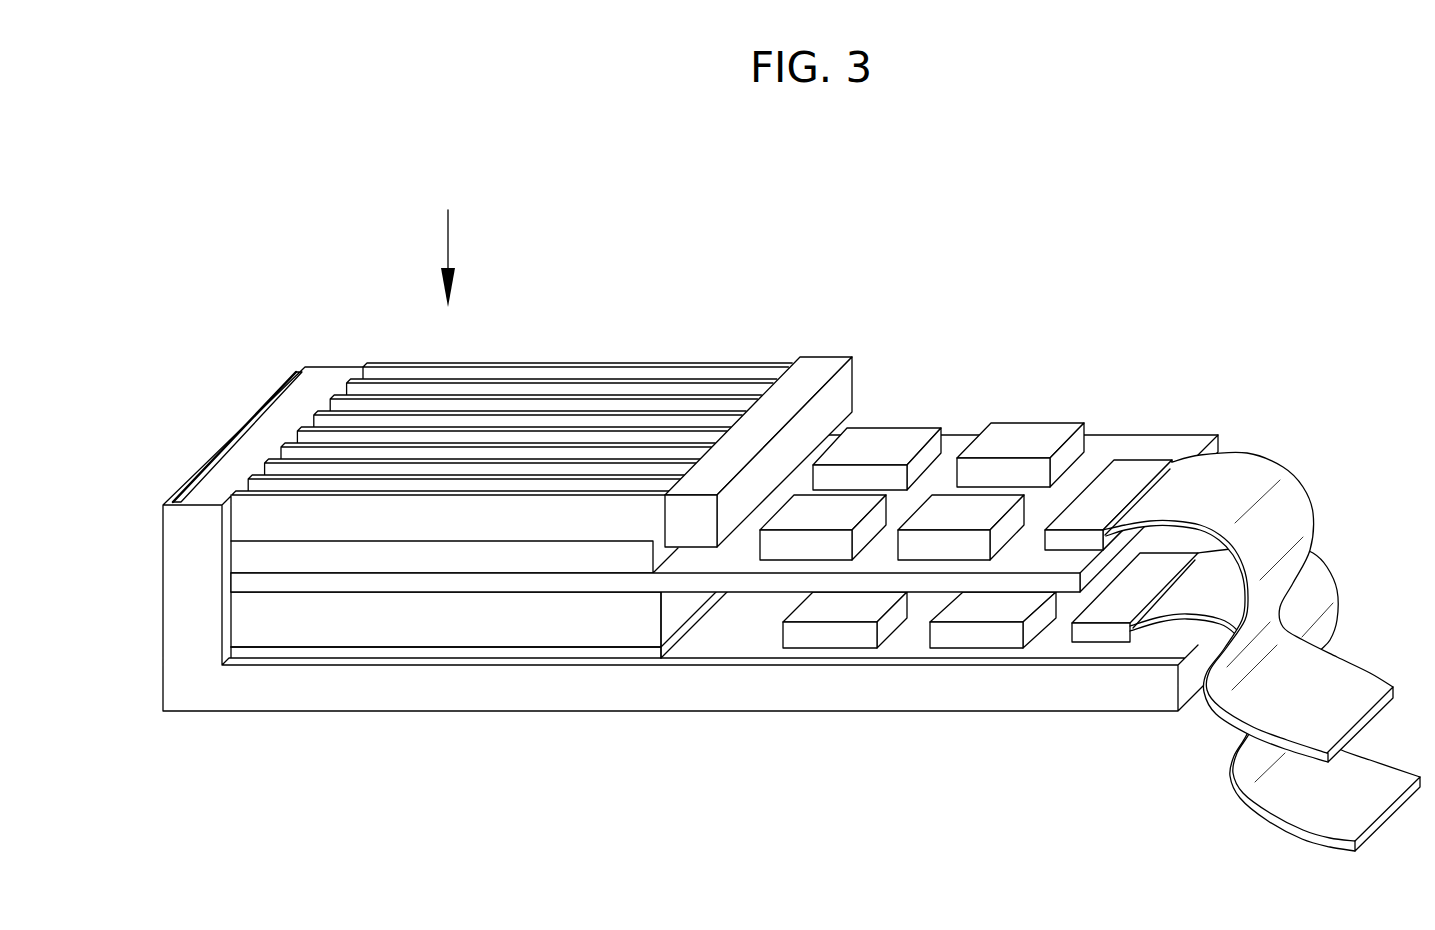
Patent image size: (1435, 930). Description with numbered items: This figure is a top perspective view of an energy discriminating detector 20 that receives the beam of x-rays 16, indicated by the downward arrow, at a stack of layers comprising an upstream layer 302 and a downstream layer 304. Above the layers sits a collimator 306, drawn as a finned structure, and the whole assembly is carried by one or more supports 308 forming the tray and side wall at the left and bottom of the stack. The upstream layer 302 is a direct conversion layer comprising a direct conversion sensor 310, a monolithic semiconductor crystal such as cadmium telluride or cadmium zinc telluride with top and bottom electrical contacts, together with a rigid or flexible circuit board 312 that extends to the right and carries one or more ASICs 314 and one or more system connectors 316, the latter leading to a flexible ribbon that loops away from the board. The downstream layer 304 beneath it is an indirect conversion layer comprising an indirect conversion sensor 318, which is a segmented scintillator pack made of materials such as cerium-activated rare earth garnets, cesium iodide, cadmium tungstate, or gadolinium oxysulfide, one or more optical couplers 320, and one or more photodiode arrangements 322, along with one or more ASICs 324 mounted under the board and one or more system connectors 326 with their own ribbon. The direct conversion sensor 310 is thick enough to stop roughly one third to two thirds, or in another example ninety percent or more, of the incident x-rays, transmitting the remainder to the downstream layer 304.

The beam of x-rays 16 is at (448, 238).
The ED detector 20 is at (845, 250).
The upstream layer 302 is at (240, 561).
The downstream layer 304 is at (242, 610).
The collimator 306 is at (678, 368).
The support 308 is at (205, 698).
The direct conversion sensor 310 is at (540, 556).
The circuit board 312 is at (1138, 430).
The ASIC 314 is at (1020, 424).
The system connector 316 is at (1280, 453).
The indirect conversion sensor 318 is at (433, 622).
The optical coupler 320 is at (332, 648).
The photodiode arrangement 322 is at (642, 654).
The ASIC 324 is at (967, 637).
The system connector 326 is at (1292, 832).